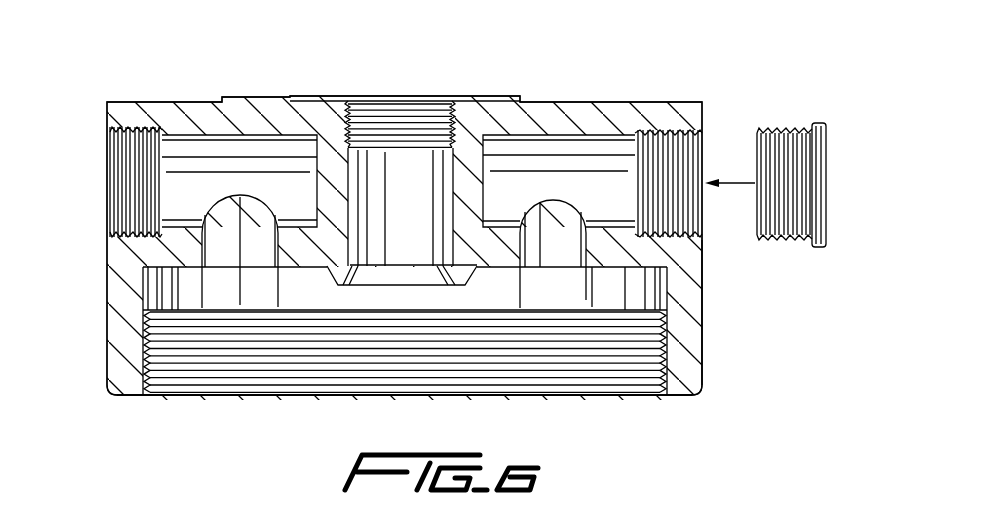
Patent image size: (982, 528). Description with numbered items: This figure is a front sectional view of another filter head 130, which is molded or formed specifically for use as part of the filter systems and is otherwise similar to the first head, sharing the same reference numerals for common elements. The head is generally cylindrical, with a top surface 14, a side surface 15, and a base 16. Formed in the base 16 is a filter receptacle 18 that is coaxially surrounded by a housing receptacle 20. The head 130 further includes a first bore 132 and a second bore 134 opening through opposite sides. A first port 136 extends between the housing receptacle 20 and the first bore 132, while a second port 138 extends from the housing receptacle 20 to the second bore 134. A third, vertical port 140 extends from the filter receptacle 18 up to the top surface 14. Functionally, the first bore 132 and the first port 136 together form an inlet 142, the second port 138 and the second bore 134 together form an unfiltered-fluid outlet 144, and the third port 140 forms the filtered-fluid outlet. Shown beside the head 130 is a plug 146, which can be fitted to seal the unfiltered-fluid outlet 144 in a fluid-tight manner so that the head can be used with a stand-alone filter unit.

The top surface 14 is at (618, 102).
The side surface 15 is at (703, 317).
The base 16 is at (673, 397).
The filter receptacle 18 is at (353, 285).
The housing receptacle 20 is at (178, 268).
The filter head 130 is at (712, 72).
The first bore 132 is at (189, 150).
The second bore 134 is at (552, 143).
The first port 136 is at (280, 246).
The second port 138 is at (584, 246).
The third port 140 is at (414, 92).
The inlet 142 is at (110, 159).
The unfiltered-fluid outlet 144 is at (632, 205).
The plug 146 is at (771, 128).